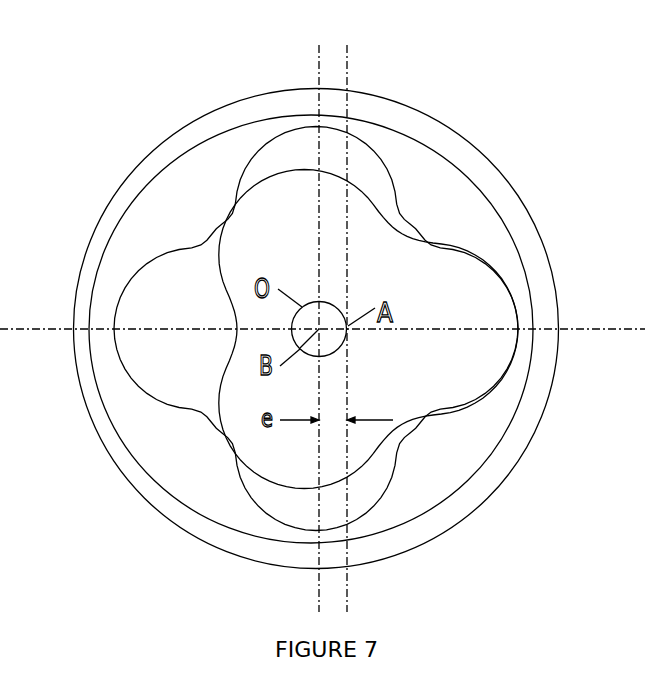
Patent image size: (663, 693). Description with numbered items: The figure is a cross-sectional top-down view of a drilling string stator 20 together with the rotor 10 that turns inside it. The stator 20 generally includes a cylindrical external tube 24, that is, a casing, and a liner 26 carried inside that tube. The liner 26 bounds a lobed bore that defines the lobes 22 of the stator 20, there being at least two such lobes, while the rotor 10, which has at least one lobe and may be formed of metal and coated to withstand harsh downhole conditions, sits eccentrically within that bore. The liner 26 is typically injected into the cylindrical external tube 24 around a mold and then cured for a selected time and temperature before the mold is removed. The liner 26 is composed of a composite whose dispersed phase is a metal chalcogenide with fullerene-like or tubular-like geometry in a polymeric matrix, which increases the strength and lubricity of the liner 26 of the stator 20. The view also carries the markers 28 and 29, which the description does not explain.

The rotor 10 is at (410, 378).
The stator 20 is at (490, 203).
The lobes 22 is at (180, 193).
The cylindrical external tube 24 is at (437, 137).
The liner 26 is at (500, 253).
The annular gap 28 is at (148, 355).
The housing ring 29 is at (450, 497).